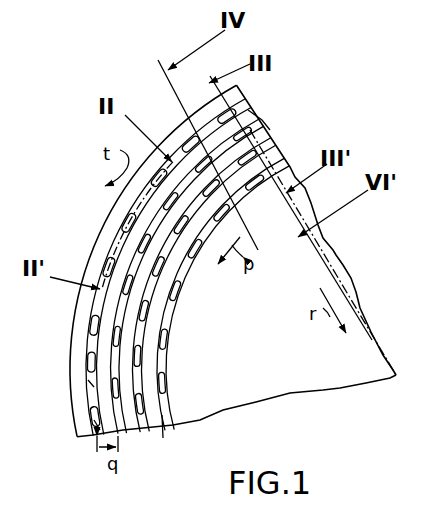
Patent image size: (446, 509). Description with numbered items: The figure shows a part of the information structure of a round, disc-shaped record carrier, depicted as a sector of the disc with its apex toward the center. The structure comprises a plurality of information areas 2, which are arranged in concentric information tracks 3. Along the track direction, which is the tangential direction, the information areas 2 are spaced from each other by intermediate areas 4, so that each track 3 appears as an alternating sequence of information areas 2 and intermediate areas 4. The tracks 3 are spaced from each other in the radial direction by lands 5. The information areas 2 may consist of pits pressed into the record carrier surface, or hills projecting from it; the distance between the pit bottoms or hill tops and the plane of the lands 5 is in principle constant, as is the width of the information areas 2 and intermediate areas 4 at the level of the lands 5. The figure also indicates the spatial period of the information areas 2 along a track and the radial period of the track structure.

The information areas 2 is at (90, 362).
The information tracks 3 is at (289, 165).
The intermediate areas 4 is at (97, 428).
The lands 5 is at (140, 428).